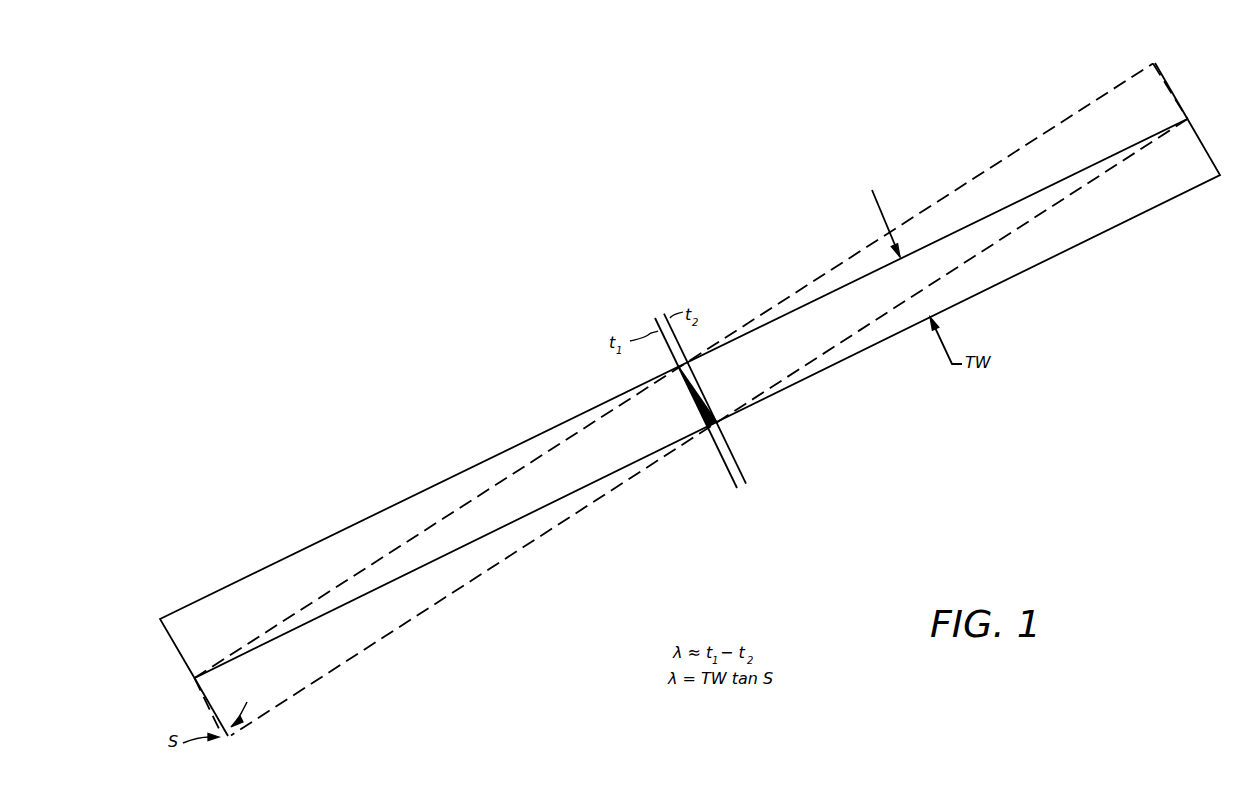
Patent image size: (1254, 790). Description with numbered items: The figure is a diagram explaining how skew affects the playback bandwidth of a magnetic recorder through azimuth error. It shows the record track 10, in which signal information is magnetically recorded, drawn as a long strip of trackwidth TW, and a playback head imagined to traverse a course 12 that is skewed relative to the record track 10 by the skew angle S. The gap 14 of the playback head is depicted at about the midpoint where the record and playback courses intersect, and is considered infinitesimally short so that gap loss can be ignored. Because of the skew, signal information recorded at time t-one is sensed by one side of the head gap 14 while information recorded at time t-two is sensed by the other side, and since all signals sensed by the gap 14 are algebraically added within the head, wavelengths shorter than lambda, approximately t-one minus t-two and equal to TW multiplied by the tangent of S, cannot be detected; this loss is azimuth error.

The record track 10 is at (252, 574).
The course 12 is at (399, 628).
The gap 14 is at (694, 396).